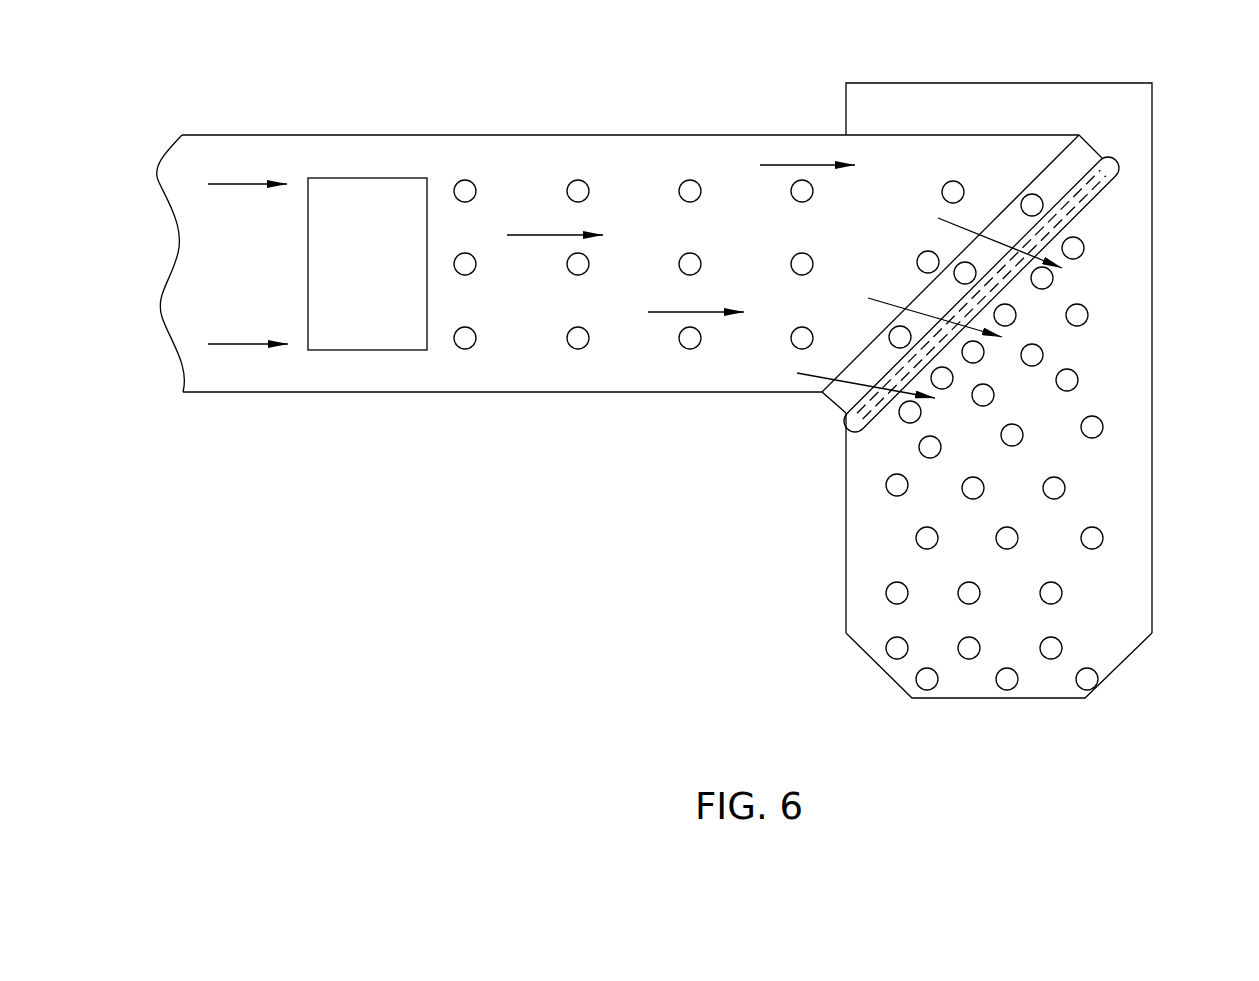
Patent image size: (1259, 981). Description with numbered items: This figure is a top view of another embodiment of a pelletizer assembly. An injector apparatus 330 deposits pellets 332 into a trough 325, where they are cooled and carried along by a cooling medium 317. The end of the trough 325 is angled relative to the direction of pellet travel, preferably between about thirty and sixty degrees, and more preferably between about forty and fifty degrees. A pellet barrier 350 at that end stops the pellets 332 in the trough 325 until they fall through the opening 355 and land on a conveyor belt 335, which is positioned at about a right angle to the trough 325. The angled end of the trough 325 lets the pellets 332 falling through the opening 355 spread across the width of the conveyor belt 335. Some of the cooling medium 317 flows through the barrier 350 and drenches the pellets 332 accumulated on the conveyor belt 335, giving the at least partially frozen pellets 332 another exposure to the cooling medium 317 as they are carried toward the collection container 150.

The collection container 150 is at (1130, 656).
The cooling medium 317 is at (780, 165).
The trough 325 is at (548, 135).
The injector apparatus 330 is at (369, 178).
The pellets 332 is at (465, 349).
The conveyor belt 335 is at (1153, 517).
The pellet barrier 350 is at (1083, 212).
The opening 355 is at (1078, 160).